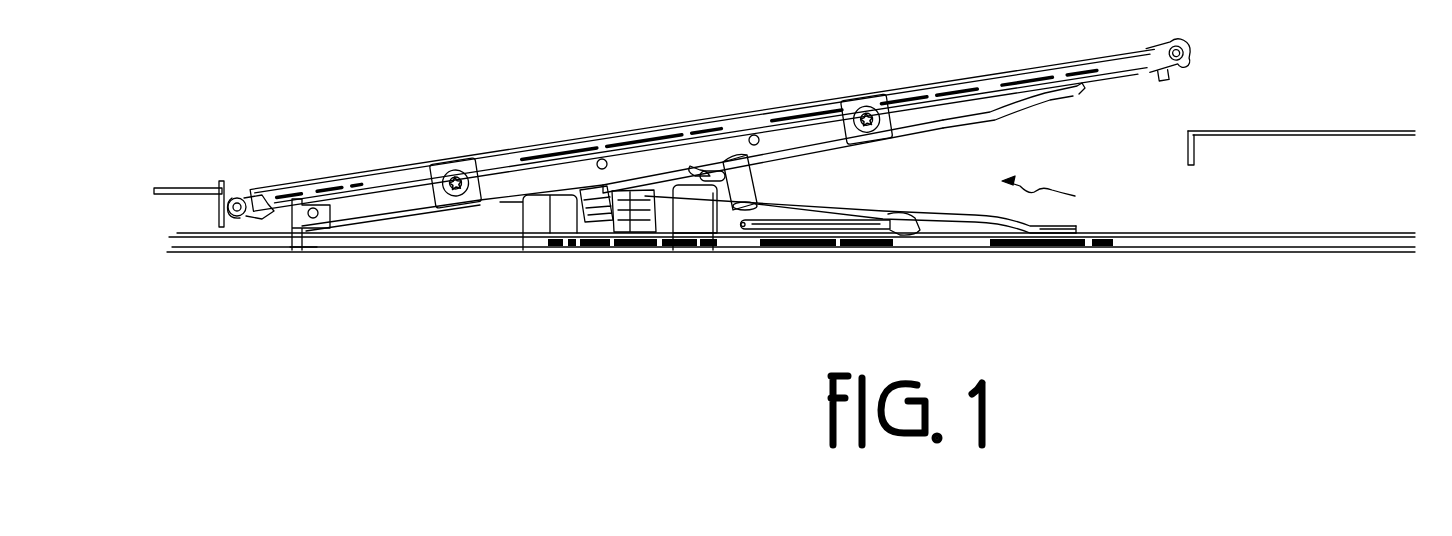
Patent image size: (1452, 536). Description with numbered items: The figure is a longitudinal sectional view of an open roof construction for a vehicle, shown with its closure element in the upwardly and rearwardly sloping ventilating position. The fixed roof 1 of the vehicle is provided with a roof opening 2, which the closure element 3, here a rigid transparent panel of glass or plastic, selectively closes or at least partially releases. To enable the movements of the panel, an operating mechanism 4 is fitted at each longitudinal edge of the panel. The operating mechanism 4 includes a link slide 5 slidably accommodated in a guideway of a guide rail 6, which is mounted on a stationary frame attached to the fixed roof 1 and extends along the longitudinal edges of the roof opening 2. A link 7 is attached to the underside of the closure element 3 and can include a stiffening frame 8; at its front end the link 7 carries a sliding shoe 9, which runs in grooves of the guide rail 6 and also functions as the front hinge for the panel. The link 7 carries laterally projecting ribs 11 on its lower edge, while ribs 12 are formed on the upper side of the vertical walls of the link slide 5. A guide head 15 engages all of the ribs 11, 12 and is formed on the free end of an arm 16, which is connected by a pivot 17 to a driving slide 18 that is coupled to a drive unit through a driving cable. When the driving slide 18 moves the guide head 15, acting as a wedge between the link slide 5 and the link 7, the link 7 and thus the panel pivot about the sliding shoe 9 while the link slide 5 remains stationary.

The fixed roof 1 is at (173, 189).
The roof opening 2 is at (227, 187).
The closure element 3 is at (557, 137).
The operating mechanism 4 is at (1049, 194).
The link slide 5 is at (983, 212).
The guide rail 6 is at (1232, 240).
The link 7 is at (700, 153).
The stiffening frame 8 is at (943, 87).
The sliding shoe 9 is at (303, 243).
The ribs 11 is at (1016, 121).
The ribs 12 is at (1025, 224).
The guide head 15 is at (745, 182).
The arm 16 is at (713, 250).
The pivot 17 is at (628, 237).
The driving slide 18 is at (535, 233).